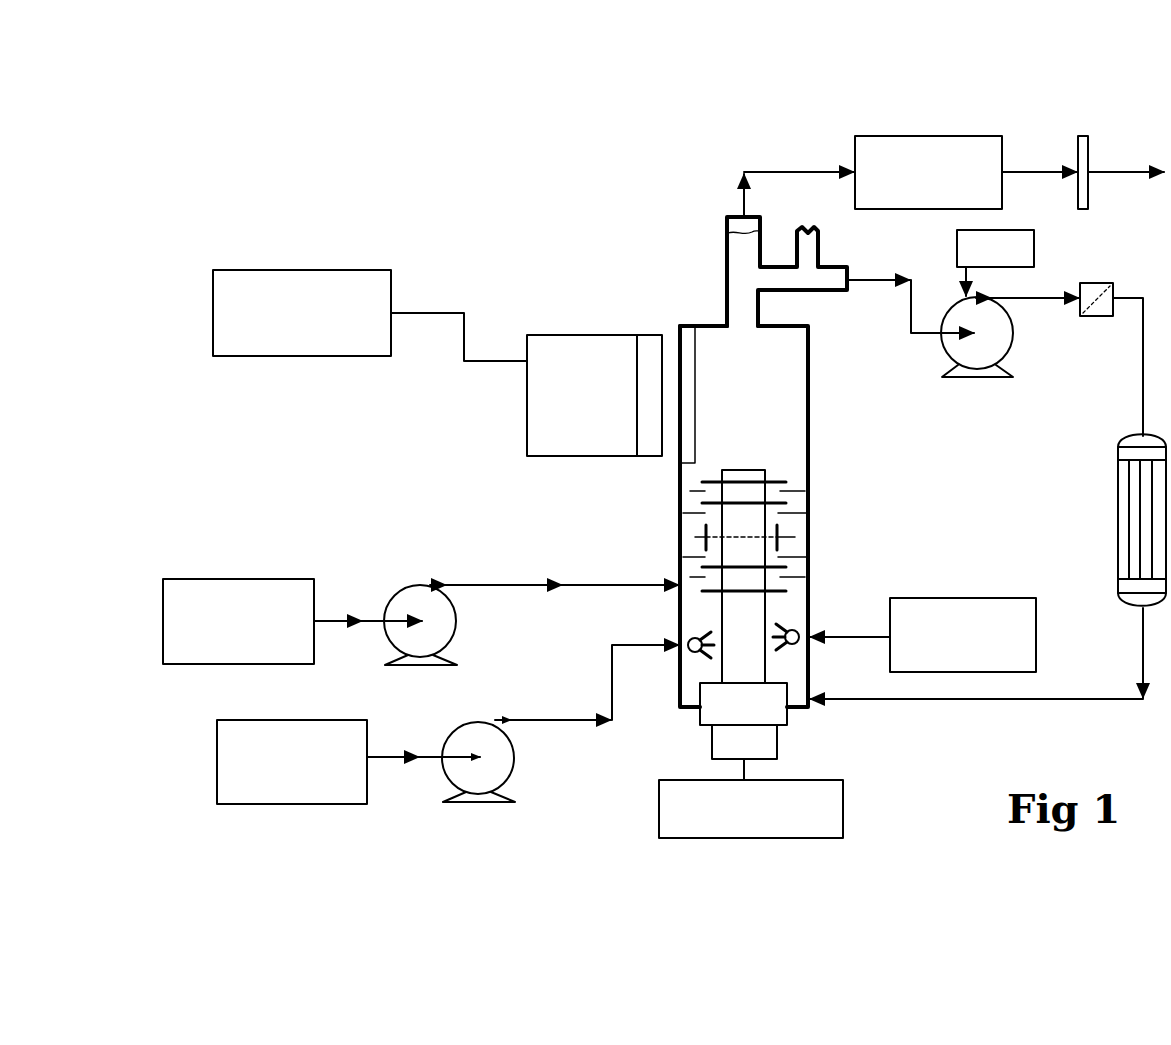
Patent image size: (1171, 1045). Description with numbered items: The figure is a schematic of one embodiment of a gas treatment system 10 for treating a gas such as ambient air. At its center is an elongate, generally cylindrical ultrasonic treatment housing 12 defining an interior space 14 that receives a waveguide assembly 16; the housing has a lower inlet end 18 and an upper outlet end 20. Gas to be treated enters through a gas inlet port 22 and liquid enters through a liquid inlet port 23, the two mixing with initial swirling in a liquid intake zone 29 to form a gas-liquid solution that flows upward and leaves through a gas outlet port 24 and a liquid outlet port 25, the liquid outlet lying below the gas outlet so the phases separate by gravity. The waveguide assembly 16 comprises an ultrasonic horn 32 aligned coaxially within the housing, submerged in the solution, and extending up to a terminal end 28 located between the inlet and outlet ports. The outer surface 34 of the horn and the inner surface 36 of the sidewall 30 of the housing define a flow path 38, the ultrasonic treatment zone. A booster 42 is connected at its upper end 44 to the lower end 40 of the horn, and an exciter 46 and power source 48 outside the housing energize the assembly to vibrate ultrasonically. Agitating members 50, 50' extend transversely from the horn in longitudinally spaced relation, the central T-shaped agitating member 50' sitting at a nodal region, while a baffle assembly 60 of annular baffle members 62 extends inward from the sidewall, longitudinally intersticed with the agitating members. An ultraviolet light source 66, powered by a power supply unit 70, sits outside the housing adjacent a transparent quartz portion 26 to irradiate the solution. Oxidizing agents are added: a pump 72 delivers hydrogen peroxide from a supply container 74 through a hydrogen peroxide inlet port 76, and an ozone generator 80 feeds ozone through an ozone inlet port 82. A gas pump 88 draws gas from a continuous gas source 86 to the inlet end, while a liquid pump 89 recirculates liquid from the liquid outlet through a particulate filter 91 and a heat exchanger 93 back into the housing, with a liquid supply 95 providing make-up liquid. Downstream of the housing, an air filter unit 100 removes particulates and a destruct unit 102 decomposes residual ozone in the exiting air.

The gas treatment system 10 is at (466, 230).
The ultrasonic treatment housing 12 is at (812, 523).
The interior space 14 is at (760, 425).
The waveguide assembly 16 is at (773, 601).
The inlet end 18 is at (695, 708).
The outlet end 20 is at (705, 325).
The gas inlet port 22 is at (685, 643).
The liquid inlet port 23 is at (810, 703).
The gas outlet port 24 is at (730, 216).
The liquid outlet port 25 is at (848, 278).
The transparent portion 26 is at (690, 415).
The terminal end 28 is at (755, 470).
The liquid intake zone 29 is at (795, 668).
The sidewall 30 is at (678, 625).
The ultrasonic horn 32 is at (737, 667).
The outer surface 34 is at (768, 667).
The inner surface 36 is at (685, 536).
The flow path 38 is at (792, 525).
The lower end 40 is at (740, 684).
The booster 42 is at (765, 710).
The upper end 44 is at (707, 682).
The exciter 46 is at (755, 745).
The power source 48 is at (843, 812).
The agitating members 50 is at (732, 529).
The agitating member 50' is at (830, 536).
The baffle assembly 60 is at (797, 486).
The baffle members 62 is at (690, 515).
The ultraviolet light source 66 is at (555, 456).
The power supply unit 70 is at (258, 270).
The pump 72 is at (443, 635).
The supply container 74 is at (207, 579).
The hydrogen peroxide inlet port 76 is at (678, 583).
The ozone generator 80 is at (1005, 598).
The ozone inlet port 82 is at (801, 635).
The continuous gas source 86 is at (228, 720).
The gas pump 88 is at (495, 772).
The liquid pump 89 is at (1000, 342).
The particulate filter 91 is at (1100, 283).
The heat exchanger 93 is at (1123, 515).
The liquid supply 95 is at (1034, 250).
The air filter unit 100 is at (1085, 155).
The destruct unit 102 is at (937, 197).